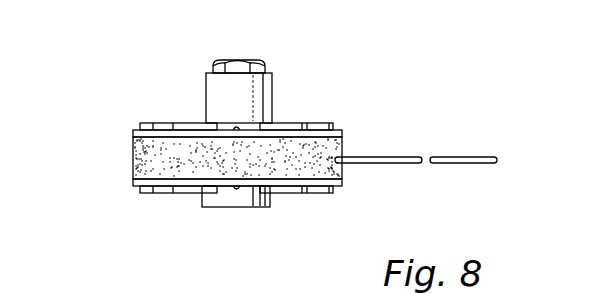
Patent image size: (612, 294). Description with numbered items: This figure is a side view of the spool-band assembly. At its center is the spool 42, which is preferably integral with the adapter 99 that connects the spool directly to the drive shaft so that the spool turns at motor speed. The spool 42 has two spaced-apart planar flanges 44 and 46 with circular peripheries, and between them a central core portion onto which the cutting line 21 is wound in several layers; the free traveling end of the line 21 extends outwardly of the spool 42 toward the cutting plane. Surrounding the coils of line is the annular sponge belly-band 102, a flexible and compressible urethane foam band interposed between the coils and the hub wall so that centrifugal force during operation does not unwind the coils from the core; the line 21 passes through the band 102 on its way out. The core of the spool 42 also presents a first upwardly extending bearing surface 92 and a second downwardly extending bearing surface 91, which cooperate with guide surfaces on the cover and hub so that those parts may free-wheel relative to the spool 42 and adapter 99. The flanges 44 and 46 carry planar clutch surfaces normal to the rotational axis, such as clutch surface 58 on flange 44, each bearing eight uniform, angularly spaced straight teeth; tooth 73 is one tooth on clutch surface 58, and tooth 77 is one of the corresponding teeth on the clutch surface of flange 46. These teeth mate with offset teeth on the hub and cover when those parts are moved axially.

The adapter 99 is at (267, 68).
The first upwardly extending bearing surface 92 is at (275, 88).
The tooth 73 is at (140, 126).
The flange 46 is at (337, 132).
The clutch surface 58 is at (223, 122).
The spool 42 is at (127, 147).
The annular sponge belly-band 102 is at (135, 165).
The tooth 77 is at (335, 191).
The flange 44 is at (137, 184).
The second downwardly extending bearing surface 91 is at (273, 204).
The cutting line 21 is at (436, 166).